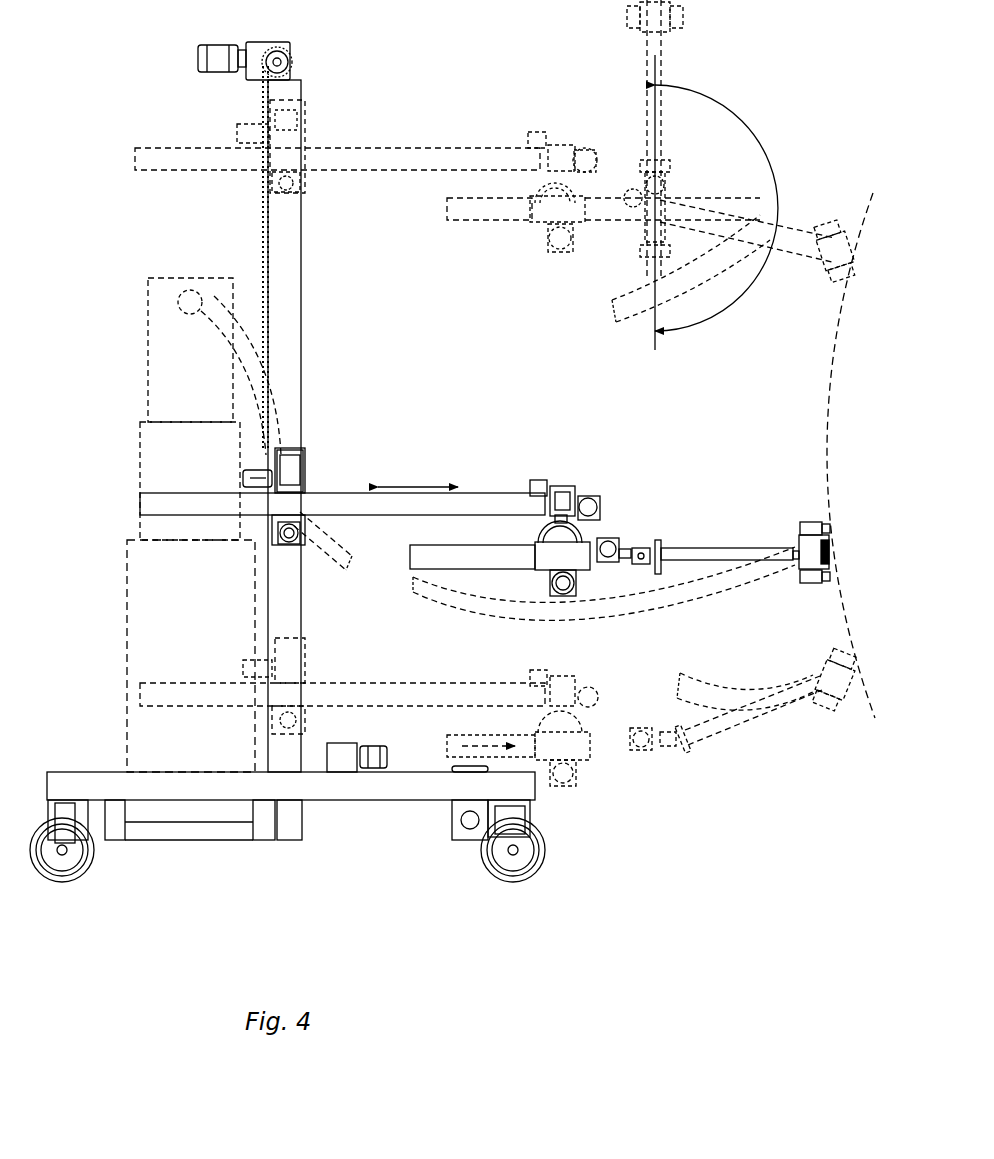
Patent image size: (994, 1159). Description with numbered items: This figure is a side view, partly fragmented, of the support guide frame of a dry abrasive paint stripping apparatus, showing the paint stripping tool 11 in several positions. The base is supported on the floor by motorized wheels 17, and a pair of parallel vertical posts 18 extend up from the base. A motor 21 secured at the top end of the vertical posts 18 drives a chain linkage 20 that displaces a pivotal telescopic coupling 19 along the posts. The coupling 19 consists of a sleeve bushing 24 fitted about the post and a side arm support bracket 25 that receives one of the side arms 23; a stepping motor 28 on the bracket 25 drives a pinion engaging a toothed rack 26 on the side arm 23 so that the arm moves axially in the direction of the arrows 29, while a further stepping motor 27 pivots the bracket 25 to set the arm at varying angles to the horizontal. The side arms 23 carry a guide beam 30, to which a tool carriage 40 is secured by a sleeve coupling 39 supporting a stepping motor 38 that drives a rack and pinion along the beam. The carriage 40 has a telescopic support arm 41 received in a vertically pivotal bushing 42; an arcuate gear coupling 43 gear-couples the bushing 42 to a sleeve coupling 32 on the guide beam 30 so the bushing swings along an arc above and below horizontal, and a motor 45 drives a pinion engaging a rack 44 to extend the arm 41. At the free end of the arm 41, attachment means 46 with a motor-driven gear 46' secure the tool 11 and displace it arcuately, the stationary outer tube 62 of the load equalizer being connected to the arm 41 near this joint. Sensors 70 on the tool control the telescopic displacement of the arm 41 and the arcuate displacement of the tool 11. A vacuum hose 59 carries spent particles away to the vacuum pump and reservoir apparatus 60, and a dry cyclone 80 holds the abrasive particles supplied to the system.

The dry abrasive paint stripping tool 11 is at (612, 32).
The motorized wheels 17 is at (462, 848).
The vertical posts 18 is at (301, 236).
The pivotal telescopic coupling 19 is at (305, 120).
The chain linkage 20 is at (264, 105).
The motor 21 is at (288, 36).
The side arms 23 is at (398, 155).
The sleeve bushing 24 is at (266, 472).
The side arm support bracket 25 is at (300, 500).
The toothed rack 26 is at (195, 493).
The stepping motor 27 is at (282, 538).
The stepping motor 28 is at (292, 468).
The arrows 29 is at (415, 480).
The guide beam 30 is at (557, 145).
The sleeve coupling 32 is at (570, 490).
The stepping motor 38 is at (536, 132).
The sleeve coupling 39 is at (572, 148).
The tool carriage 40 is at (588, 580).
The telescopic support arm 41 is at (468, 200).
The vertically pivotal bushing 42 is at (552, 562).
The arcuate gear coupling 43 is at (545, 188).
The rack 44 is at (448, 575).
The motor 45 is at (562, 592).
The attachment means 46 is at (625, 511).
The gear 46' is at (654, 532).
The vacuum hose 59 is at (702, 588).
The vacuum pump and reservoir apparatus 60 is at (150, 452).
The outer tube 62 is at (700, 548).
The sensors 70 is at (815, 522).
The dry cyclone 80 is at (160, 352).